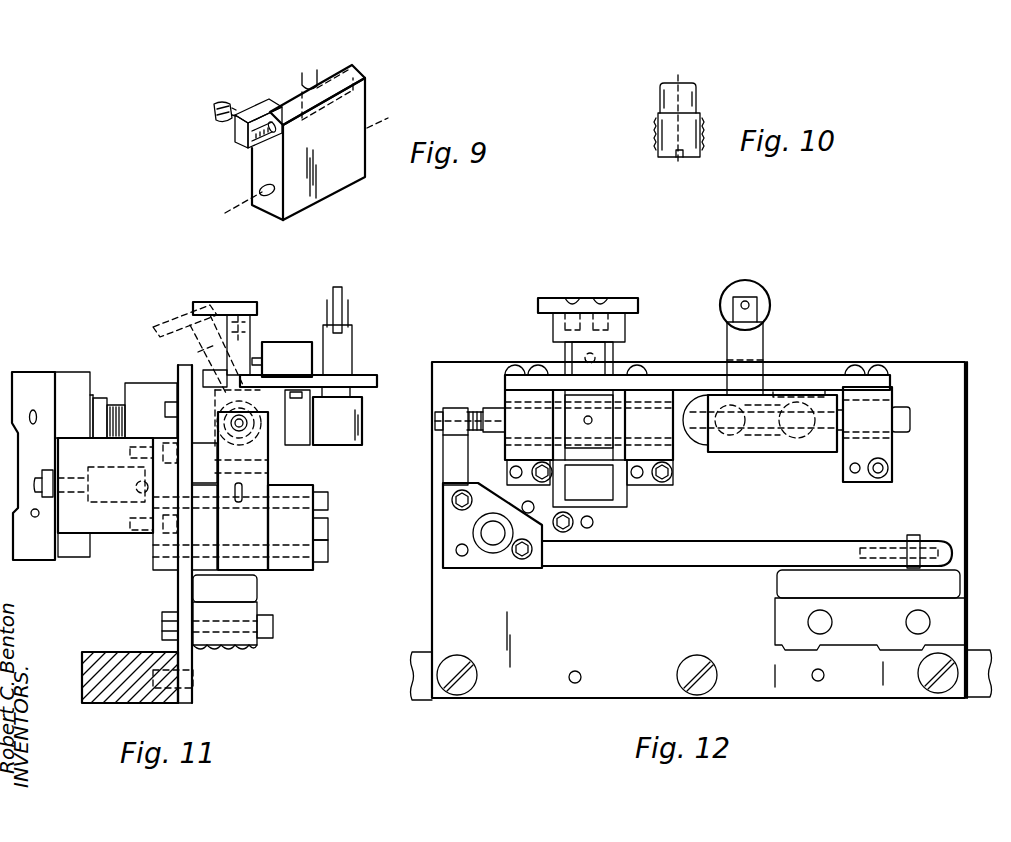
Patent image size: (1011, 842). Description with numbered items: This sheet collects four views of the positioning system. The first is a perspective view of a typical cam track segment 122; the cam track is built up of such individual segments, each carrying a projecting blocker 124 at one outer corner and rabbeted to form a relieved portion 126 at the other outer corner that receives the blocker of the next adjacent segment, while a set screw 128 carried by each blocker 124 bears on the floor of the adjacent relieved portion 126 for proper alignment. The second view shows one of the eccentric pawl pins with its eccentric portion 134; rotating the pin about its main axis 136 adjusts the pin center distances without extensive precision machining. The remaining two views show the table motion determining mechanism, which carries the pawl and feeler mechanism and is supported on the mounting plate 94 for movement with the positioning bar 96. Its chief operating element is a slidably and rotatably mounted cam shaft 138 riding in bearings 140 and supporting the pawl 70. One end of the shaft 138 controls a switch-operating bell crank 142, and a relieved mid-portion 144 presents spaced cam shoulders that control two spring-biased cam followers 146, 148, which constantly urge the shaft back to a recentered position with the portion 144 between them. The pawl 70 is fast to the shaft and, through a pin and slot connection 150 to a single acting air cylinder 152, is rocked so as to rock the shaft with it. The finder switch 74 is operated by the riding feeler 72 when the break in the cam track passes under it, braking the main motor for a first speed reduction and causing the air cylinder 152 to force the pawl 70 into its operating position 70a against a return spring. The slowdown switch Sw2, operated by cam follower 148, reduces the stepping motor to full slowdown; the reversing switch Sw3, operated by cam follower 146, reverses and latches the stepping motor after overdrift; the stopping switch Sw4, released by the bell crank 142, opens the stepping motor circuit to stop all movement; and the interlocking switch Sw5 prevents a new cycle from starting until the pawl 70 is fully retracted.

In FIG. 9, the cam track segment 122 is at (327, 197).
In FIG. 9, the projecting blocker 124 is at (235, 135).
In FIG. 9, the relieved portion 126 is at (317, 82).
In FIG. 9, the set screw 128 is at (222, 100).
In FIG. 10, the eccentric portion 134 is at (660, 102).
In FIG. 10, the main axis 136 is at (680, 160).
In FIG. 11, the pawl 70 is at (265, 290).
In FIG. 12, the pawl 70 is at (553, 327).
In FIG. 11, the operating position of pawl 70a is at (163, 325).
In FIG. 11, the feeler 72 is at (342, 288).
In FIG. 12, the feeler 72 is at (762, 287).
In FIG. 11, the finder switch 74 is at (360, 422).
In FIG. 12, the finder switch 74 is at (792, 455).
In FIG. 11, the mounting plate 94 is at (178, 592).
In FIG. 12, the mounting plate 94 is at (442, 608).
In FIG. 11, the positioning bar 96 is at (107, 697).
In FIG. 12, the positioning bar 96 is at (412, 668).
In FIG. 11, the cam shaft 138 is at (246, 426).
In FIG. 12, the cam shaft 138 is at (490, 433).
In FIG. 12, the bearings 140 is at (505, 397).
In FIG. 12, the switch-operating bell crank 142 is at (660, 563).
In FIG. 12, the relieved mid-portion 144 is at (750, 432).
In FIG. 11, the cam follower 146 is at (135, 476).
In FIG. 12, the cam follower 146 is at (733, 442).
In FIG. 12, the cam follower 148 is at (810, 445).
In FIG. 11, the pin and slot connection 150 is at (267, 492).
In FIG. 11, the single acting air cylinder 152 is at (132, 535).
In FIG. 12, the slowdown switch Sw2 is at (826, 395).
In FIG. 11, the reversing switch Sw3 is at (33, 382).
In FIG. 12, the reversing switch Sw3 is at (702, 398).
In FIG. 11, the stopping switch Sw4 is at (257, 645).
In FIG. 12, the stopping switch Sw4 is at (775, 625).
In FIG. 11, the interlocking switch Sw5 is at (302, 342).
In FIG. 12, the interlocking switch Sw5 is at (620, 353).